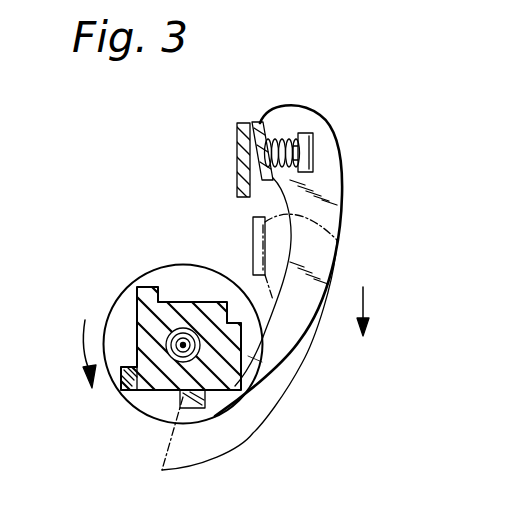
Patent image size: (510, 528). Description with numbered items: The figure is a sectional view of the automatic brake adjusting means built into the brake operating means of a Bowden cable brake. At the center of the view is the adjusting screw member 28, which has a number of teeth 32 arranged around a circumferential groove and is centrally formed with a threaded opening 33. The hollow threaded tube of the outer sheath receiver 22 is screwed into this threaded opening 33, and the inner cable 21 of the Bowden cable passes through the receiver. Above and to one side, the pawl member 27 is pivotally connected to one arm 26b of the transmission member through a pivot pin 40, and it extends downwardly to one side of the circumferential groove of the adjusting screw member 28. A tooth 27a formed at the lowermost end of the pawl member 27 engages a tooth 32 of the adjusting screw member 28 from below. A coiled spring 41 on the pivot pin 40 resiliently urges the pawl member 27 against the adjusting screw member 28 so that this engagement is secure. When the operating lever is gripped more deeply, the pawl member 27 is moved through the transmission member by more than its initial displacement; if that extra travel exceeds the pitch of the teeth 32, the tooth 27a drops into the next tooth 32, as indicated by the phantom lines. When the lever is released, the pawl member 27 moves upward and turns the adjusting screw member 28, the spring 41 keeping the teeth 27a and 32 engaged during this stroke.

The inner cable 21 is at (250, 412).
The outer sheath receiver 22 is at (262, 362).
The arm of the transmission member 26b is at (236, 150).
The pawl member 27 is at (342, 227).
The tooth 27a is at (233, 322).
The adjusting screw member 28 is at (152, 272).
The teeth 32 is at (162, 292).
The threaded opening 33 is at (142, 308).
The pivot pin 40 is at (315, 146).
The coiled spring 41 is at (277, 140).